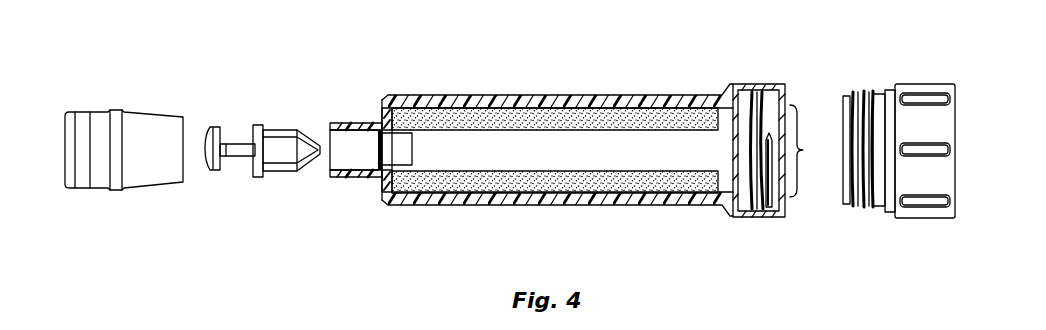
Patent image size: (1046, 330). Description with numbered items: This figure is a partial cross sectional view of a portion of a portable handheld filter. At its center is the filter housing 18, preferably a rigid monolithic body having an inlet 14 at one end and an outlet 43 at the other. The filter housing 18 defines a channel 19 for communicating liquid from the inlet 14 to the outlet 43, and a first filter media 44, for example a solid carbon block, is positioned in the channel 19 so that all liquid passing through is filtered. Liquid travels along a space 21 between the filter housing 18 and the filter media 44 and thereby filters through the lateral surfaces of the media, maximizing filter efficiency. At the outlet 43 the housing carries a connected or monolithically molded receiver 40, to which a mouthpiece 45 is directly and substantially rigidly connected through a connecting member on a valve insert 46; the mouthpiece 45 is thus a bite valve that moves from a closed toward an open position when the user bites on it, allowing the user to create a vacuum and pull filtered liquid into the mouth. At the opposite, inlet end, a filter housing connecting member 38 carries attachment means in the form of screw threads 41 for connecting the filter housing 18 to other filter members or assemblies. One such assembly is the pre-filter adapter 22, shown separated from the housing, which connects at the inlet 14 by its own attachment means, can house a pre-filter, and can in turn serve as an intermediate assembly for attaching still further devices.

The inlet 14 is at (583, 145).
The filter housing 18 is at (497, 100).
The channel 19 is at (804, 208).
The space 21 is at (492, 192).
The pre-filter adapter 22 is at (868, 90).
The filter housing connecting member 38 is at (742, 84).
The receiver 40 is at (355, 172).
The screw threads 41 is at (766, 94).
The outlet 43 is at (345, 143).
The first filter media 44 is at (423, 118).
The mouthpiece 45 is at (80, 112).
The valve insert 46 is at (258, 124).